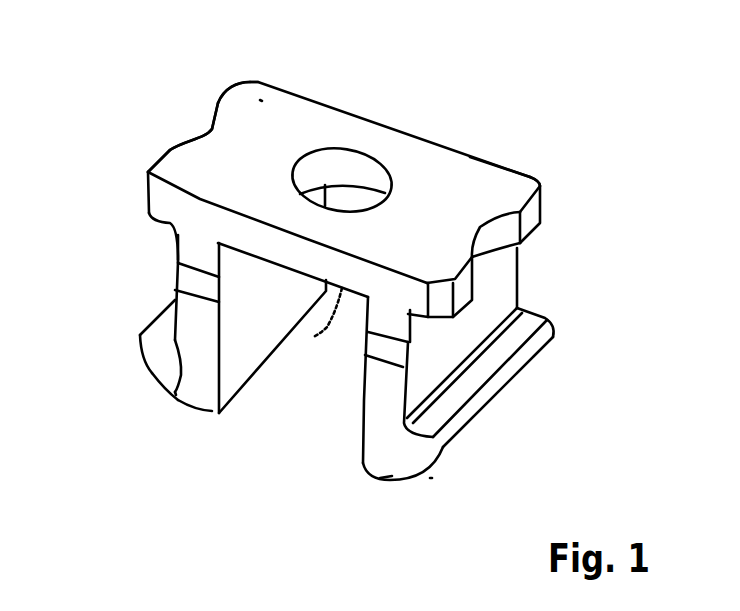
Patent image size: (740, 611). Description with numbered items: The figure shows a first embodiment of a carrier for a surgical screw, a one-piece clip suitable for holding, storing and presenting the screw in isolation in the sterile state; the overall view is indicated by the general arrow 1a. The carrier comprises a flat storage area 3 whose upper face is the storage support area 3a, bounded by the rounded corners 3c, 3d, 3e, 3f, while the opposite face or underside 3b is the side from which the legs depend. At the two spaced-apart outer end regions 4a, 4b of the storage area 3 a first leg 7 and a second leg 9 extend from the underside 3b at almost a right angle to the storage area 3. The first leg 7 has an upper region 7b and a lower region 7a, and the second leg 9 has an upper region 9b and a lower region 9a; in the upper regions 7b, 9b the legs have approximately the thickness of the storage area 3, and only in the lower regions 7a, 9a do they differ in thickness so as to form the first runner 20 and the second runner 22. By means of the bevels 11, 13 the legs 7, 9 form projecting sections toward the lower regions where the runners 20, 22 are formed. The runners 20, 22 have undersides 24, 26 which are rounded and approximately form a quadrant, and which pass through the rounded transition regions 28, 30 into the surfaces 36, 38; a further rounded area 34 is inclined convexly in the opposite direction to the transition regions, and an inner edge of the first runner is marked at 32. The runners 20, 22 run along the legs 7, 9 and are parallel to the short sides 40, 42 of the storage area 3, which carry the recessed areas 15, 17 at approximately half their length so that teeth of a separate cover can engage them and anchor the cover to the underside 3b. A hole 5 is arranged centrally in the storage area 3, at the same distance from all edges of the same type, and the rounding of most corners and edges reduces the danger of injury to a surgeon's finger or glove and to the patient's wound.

The retaining clip 1a is at (134, 64).
The storage area 3 is at (430, 165).
The storage support area 3a is at (349, 159).
The side opposite the storage support area 3b is at (319, 321).
The corner 3c is at (148, 200).
The corner 3d is at (252, 80).
The corner 3e is at (550, 180).
The corner 3f is at (470, 278).
The outer end region 4a is at (495, 192).
The outer end region 4b is at (258, 96).
The hole 5 is at (353, 170).
The first leg 7 is at (166, 268).
The lower region of the first leg 7a is at (235, 370).
The upper region of the first leg 7b is at (195, 250).
The second leg 9 is at (350, 447).
The lower region of the second leg 9a is at (372, 430).
The upper region of the second leg 9b is at (380, 320).
The bevel 11 is at (178, 282).
The bevel 13 is at (470, 365).
The recessed area 15 is at (207, 130).
The recessed area 17 is at (493, 237).
The first runner 20 is at (165, 382).
The second runner 22 is at (395, 465).
The underside of the runner 24 is at (152, 373).
The underside of the runner 26 is at (424, 480).
The rounded transition region 28 is at (145, 340).
The rounded transition region 30 is at (470, 410).
The inner edge of tip 32 is at (175, 392).
The further rounded area 34 is at (520, 310).
The surface 36 is at (160, 322).
The surface 38 is at (512, 340).
The short side 40 is at (474, 298).
The short side 42 is at (170, 150).